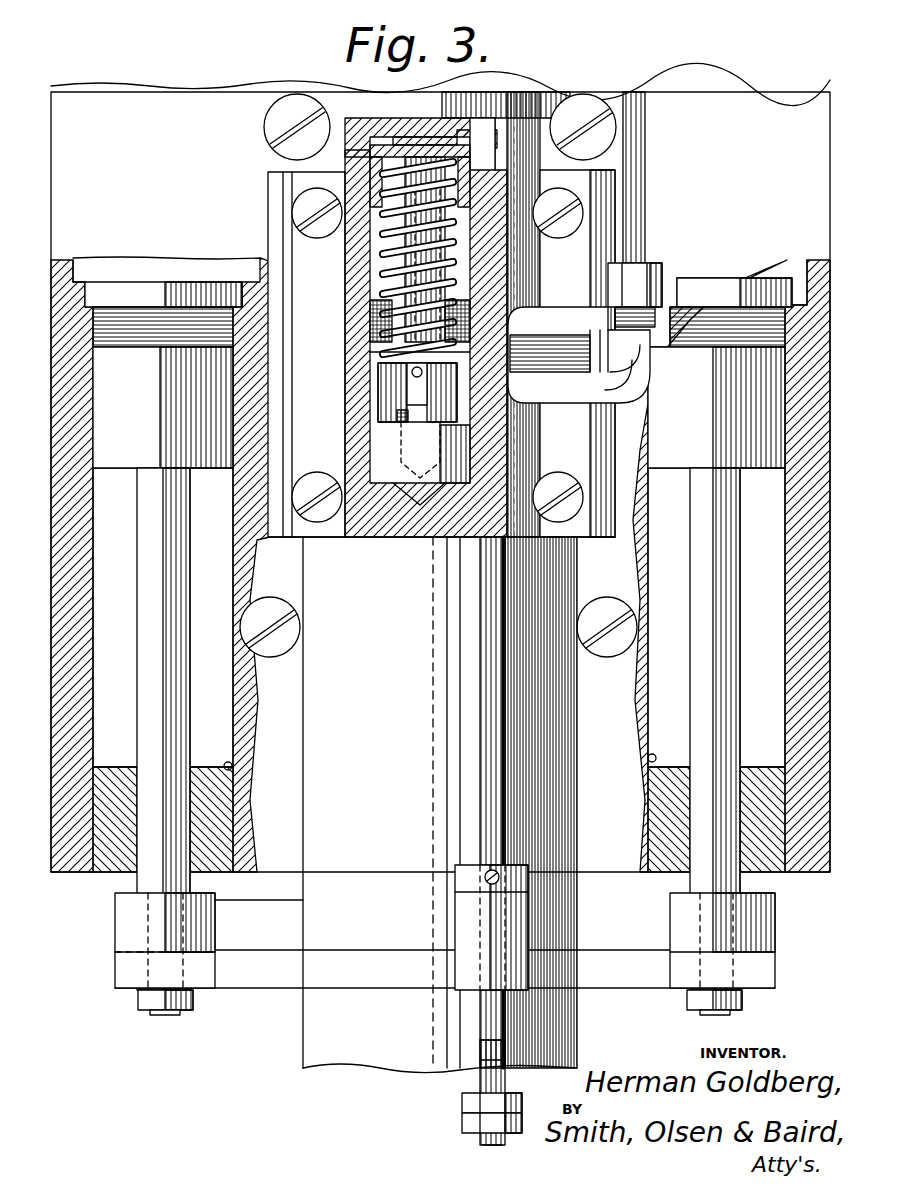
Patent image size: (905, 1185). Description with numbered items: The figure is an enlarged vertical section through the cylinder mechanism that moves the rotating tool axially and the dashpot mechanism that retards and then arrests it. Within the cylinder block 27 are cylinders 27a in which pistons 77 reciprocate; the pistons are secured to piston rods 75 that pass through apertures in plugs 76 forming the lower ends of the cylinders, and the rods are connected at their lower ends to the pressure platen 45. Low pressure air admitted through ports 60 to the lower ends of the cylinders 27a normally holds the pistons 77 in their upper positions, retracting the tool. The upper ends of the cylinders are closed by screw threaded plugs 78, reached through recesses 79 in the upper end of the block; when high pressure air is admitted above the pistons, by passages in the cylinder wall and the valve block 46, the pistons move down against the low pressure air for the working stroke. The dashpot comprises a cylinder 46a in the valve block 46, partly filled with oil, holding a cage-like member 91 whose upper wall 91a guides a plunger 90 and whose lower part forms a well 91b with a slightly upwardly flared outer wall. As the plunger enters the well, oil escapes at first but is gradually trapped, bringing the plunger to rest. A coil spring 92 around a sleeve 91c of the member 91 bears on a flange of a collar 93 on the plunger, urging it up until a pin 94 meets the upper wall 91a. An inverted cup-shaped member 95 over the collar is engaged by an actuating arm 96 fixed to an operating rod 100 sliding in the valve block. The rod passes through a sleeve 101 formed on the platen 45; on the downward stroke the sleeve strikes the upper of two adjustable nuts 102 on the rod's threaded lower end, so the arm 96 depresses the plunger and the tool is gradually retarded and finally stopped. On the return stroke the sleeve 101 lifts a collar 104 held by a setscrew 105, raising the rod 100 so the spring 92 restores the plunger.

The cylinder block 27 is at (724, 179).
The cylinders 27a is at (134, 671).
The pressure platen 45 is at (260, 970).
The valve block 46 is at (490, 282).
The cylinder 46a is at (372, 245).
The ports 60 is at (226, 762).
The piston rods 75 is at (187, 637).
The plugs 76 is at (117, 855).
The pistons 77 is at (125, 455).
The screw threaded plugs 78 is at (155, 327).
The recesses 79 is at (88, 273).
The plunger 90 is at (365, 186).
The cage-like member 91 is at (378, 442).
The upper wall 91a is at (378, 352).
The well 91b is at (393, 410).
The sleeve 91c is at (387, 296).
The coil spring 92 is at (385, 273).
The collar 93 is at (398, 158).
The pin 94 is at (412, 373).
The inverted cup-shaped member 95 is at (360, 158).
The actuating arm 96 is at (482, 117).
The operating rod 100 is at (488, 662).
The sleeve 101 is at (472, 918).
The nuts 102 is at (462, 1119).
The collar 104 is at (465, 883).
The setscrew 105 is at (485, 873).